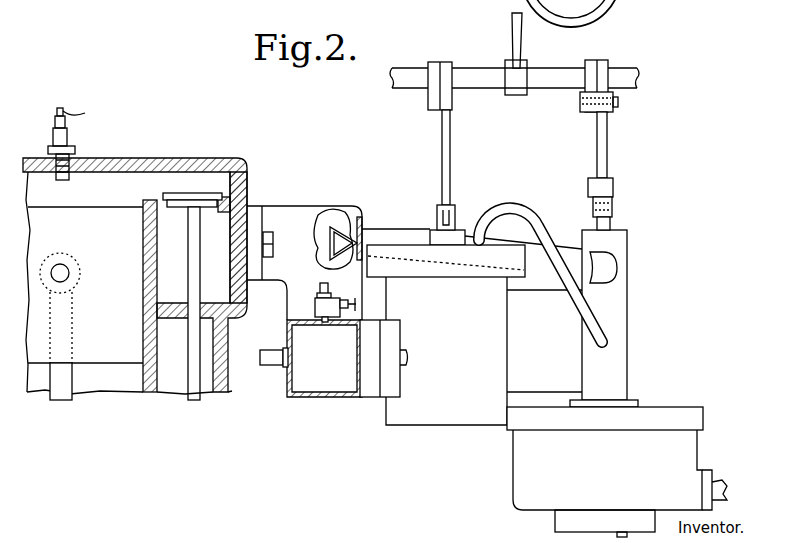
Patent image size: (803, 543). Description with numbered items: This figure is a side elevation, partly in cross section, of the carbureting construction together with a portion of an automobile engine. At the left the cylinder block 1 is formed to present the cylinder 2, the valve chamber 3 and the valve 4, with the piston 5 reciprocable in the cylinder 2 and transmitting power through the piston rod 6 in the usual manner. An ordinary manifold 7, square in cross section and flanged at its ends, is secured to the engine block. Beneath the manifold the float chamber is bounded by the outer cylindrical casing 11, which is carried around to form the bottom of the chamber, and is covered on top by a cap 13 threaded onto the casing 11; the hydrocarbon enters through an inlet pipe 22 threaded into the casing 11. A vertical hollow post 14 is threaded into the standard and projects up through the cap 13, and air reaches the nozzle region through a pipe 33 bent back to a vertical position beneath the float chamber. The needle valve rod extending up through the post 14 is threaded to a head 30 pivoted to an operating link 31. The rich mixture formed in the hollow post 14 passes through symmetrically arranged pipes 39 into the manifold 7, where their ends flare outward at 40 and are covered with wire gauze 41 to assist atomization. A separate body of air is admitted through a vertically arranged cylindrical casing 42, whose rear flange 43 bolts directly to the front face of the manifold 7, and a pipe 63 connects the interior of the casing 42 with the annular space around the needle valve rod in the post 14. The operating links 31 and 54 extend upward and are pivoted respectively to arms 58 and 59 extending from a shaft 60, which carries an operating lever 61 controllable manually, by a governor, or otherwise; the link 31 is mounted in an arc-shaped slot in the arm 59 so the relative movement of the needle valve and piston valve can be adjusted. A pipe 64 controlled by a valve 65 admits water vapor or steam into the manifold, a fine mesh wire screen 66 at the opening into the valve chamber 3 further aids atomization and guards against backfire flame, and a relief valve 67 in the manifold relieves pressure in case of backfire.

The cylinder block 1 is at (137, 160).
The cylinder 2 is at (117, 382).
The valve chamber 3 is at (220, 210).
The valve 4 is at (180, 197).
The piston 5 is at (84, 222).
The piston rod 6 is at (73, 383).
The manifold 7 is at (290, 212).
The cylindrical casing 11 is at (687, 445).
The cap 13 is at (690, 410).
The hollow post 14 is at (618, 303).
The inlet pipe 22 is at (717, 480).
The head 30 is at (613, 200).
The operating link 31 is at (604, 165).
The pipe 33 is at (622, 532).
The pipes 39 is at (360, 242).
The flared end 40 is at (337, 228).
The wire gauze 41 is at (323, 210).
The cylindrical casing 42 is at (452, 413).
The flange 43 is at (395, 332).
The operating link 54 is at (450, 160).
The arm 58 is at (433, 97).
The arm 59 is at (593, 107).
The shaft 60 is at (553, 72).
The operating lever 61 is at (512, 33).
The pipe 63 is at (528, 211).
The pipe 64 is at (323, 290).
The valve 65 is at (355, 307).
The fine mesh wire screen 66 is at (240, 230).
The relief valve 67 is at (270, 360).